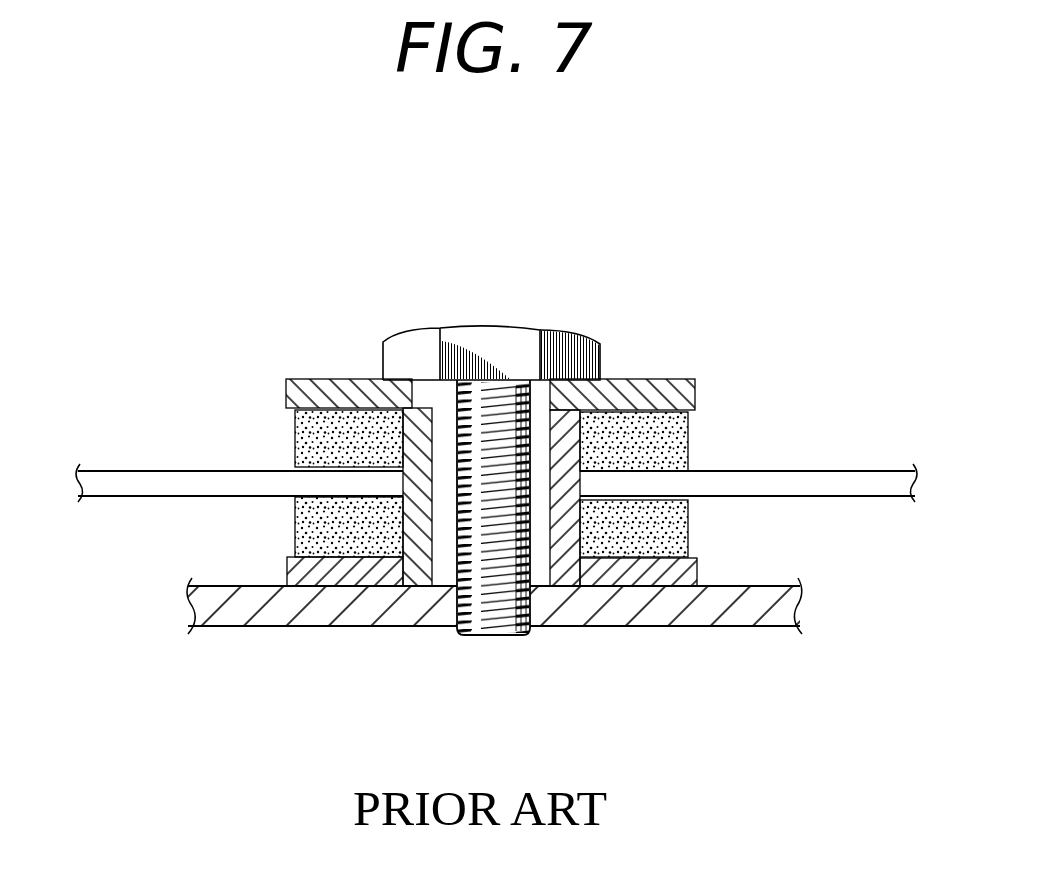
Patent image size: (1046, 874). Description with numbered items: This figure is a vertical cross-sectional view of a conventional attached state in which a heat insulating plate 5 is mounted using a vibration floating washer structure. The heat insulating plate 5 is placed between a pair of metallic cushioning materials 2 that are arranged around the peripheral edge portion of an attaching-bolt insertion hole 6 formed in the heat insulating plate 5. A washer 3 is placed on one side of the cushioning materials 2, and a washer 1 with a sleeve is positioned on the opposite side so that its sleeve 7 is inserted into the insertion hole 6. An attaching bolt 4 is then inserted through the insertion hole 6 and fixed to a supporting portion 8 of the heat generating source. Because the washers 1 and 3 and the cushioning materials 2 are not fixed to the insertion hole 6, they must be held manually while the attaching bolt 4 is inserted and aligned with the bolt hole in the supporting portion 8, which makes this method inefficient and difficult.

The washer with a sleeve 1 is at (708, 566).
The metallic cushioning materials 2 is at (690, 440).
The washer 3 is at (329, 379).
The attaching bolt 4 is at (500, 341).
The heat insulating plate 5 is at (890, 471).
The attaching-bolt insertion hole 6 is at (550, 381).
The sleeve 7 is at (566, 341).
The supporting portion 8 is at (758, 627).